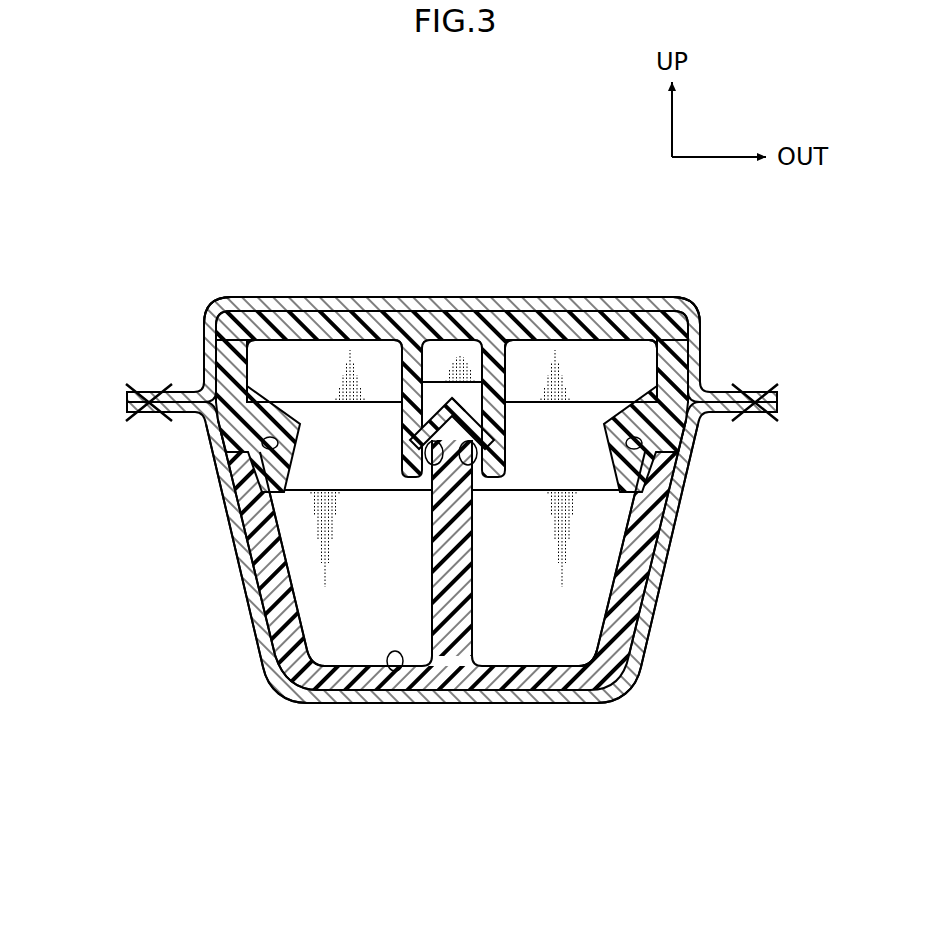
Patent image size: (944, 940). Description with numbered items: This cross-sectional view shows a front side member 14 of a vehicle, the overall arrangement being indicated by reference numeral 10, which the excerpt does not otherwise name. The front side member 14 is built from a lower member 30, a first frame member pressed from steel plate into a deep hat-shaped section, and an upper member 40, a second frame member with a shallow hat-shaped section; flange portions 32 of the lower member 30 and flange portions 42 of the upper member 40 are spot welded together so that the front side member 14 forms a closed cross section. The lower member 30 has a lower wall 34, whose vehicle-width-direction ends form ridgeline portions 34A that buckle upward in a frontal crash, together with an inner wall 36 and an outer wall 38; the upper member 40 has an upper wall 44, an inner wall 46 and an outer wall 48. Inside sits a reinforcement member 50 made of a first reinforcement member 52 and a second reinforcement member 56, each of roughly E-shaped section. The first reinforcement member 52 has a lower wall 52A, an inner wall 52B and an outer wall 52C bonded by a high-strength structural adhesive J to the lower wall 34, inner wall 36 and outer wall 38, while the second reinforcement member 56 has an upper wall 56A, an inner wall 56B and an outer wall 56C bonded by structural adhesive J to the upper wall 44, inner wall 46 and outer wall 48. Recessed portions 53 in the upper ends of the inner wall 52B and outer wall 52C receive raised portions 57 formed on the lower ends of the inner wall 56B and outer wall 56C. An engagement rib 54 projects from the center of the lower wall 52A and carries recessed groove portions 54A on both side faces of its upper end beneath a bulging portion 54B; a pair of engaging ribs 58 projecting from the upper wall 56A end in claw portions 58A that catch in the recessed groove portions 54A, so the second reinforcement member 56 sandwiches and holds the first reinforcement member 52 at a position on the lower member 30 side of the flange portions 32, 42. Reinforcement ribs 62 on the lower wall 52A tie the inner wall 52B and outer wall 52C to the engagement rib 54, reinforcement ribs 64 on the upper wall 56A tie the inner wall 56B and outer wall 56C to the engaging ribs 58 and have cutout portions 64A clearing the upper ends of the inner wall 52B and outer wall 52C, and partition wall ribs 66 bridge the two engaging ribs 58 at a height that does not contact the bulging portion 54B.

The vehicle structural member 10 is at (302, 214).
The front side member 14 is at (230, 287).
The lower member 30 is at (458, 708).
The flange portions 32 is at (125, 412).
The lower wall 34 is at (363, 699).
The ridgeline portions 34A is at (282, 697).
The inner wall 36 is at (241, 540).
The outer wall 38 is at (670, 538).
The upper member 40 is at (458, 300).
The flange portions 42 is at (127, 392).
The upper wall 44 is at (380, 303).
The inner wall 46 is at (204, 350).
The outer wall 48 is at (703, 368).
The reinforcement member 50 is at (280, 680).
The first reinforcement member 52 is at (592, 690).
The lower wall 52A is at (392, 670).
The inner wall 52B is at (280, 598).
The outer wall 52C is at (660, 580).
The recessed portions 53 is at (262, 455).
The engagement rib 54 is at (474, 585).
The recessed groove portions 54A is at (430, 500).
The bulging portion 54B is at (447, 405).
The second reinforcement member 56 is at (630, 355).
The upper wall 56A is at (303, 338).
The inner wall 56B is at (251, 372).
The outer wall 56C is at (657, 372).
The raised portions 57 is at (278, 440).
The engaging ribs 58 is at (410, 440).
The claw portions 58A is at (450, 462).
The reinforcement ribs 62 is at (338, 648).
The reinforcement ribs 64 is at (366, 333).
The cutout portions 64A is at (270, 393).
The partition wall ribs 66 is at (500, 345).
The structural adhesive J is at (652, 341).